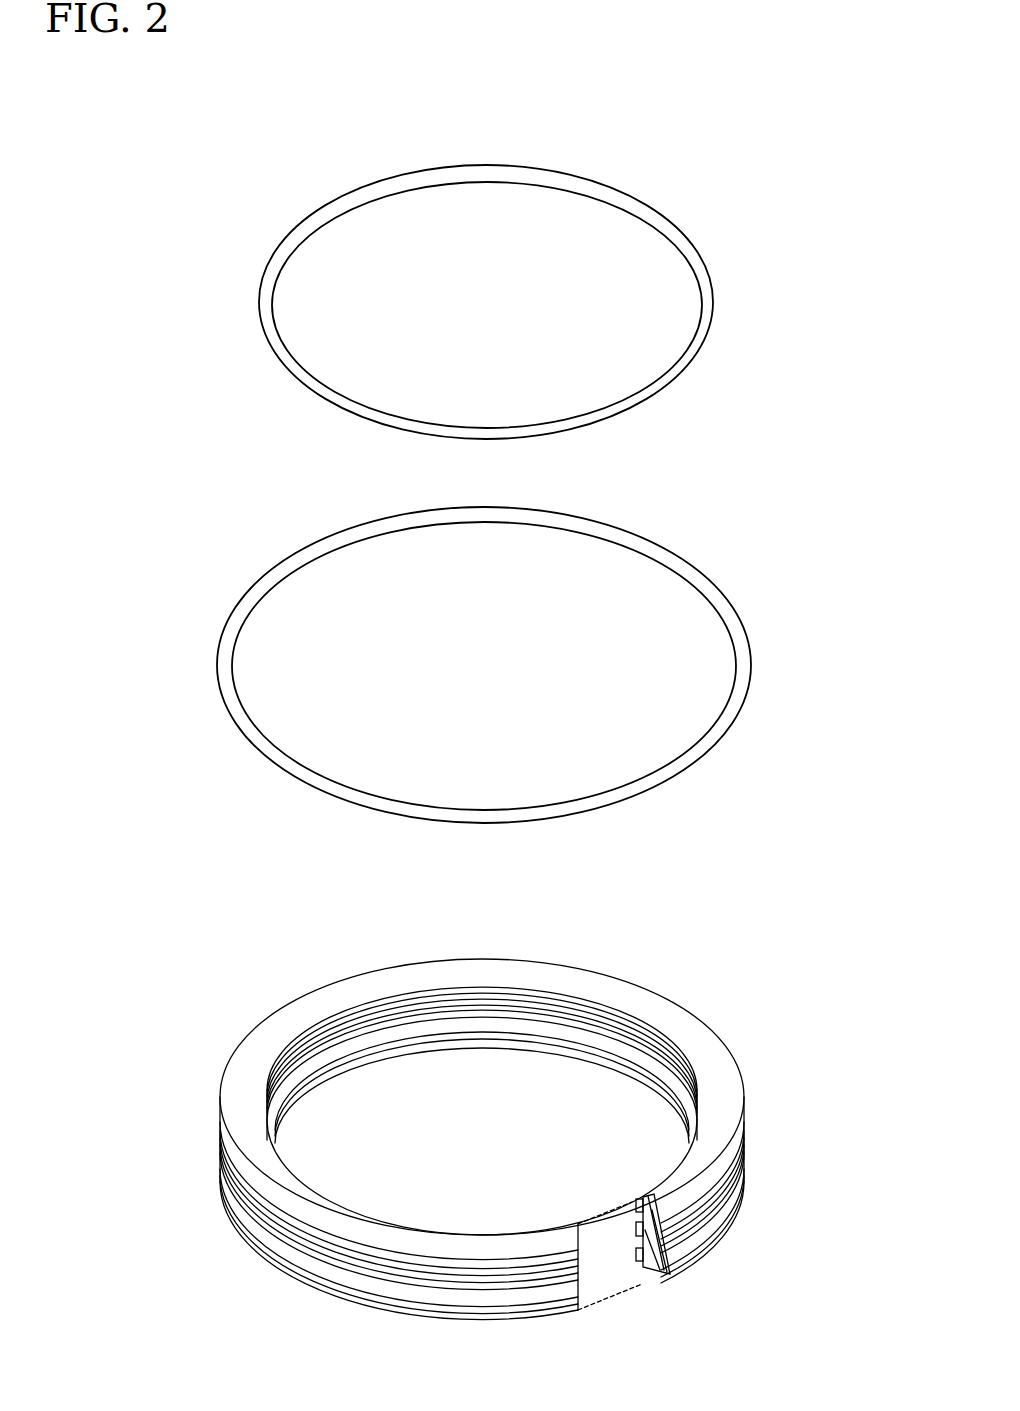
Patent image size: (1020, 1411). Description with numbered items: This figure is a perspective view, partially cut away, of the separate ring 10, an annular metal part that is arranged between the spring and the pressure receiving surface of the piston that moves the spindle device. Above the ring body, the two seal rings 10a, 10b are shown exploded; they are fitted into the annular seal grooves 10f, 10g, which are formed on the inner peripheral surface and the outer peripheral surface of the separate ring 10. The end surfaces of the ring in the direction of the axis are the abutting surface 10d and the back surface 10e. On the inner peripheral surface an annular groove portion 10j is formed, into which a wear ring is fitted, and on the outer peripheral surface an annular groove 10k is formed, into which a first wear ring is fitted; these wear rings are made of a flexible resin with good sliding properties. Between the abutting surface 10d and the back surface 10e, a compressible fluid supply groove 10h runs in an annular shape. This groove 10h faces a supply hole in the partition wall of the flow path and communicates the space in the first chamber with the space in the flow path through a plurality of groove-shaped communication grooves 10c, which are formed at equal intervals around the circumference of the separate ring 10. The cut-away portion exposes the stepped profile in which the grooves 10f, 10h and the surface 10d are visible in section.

The separate ring 10 is at (710, 1012).
The seal ring 10a is at (672, 554).
The seal ring 10b is at (658, 212).
The communication groove 10c is at (733, 1198).
The abutting surface 10d is at (642, 1276).
The back surface 10e is at (625, 1003).
The seal groove 10f is at (690, 1251).
The seal groove 10g is at (568, 1010).
The compressible fluid supply groove 10h is at (676, 1270).
The groove portion 10j is at (511, 1023).
The groove 10k is at (351, 1272).